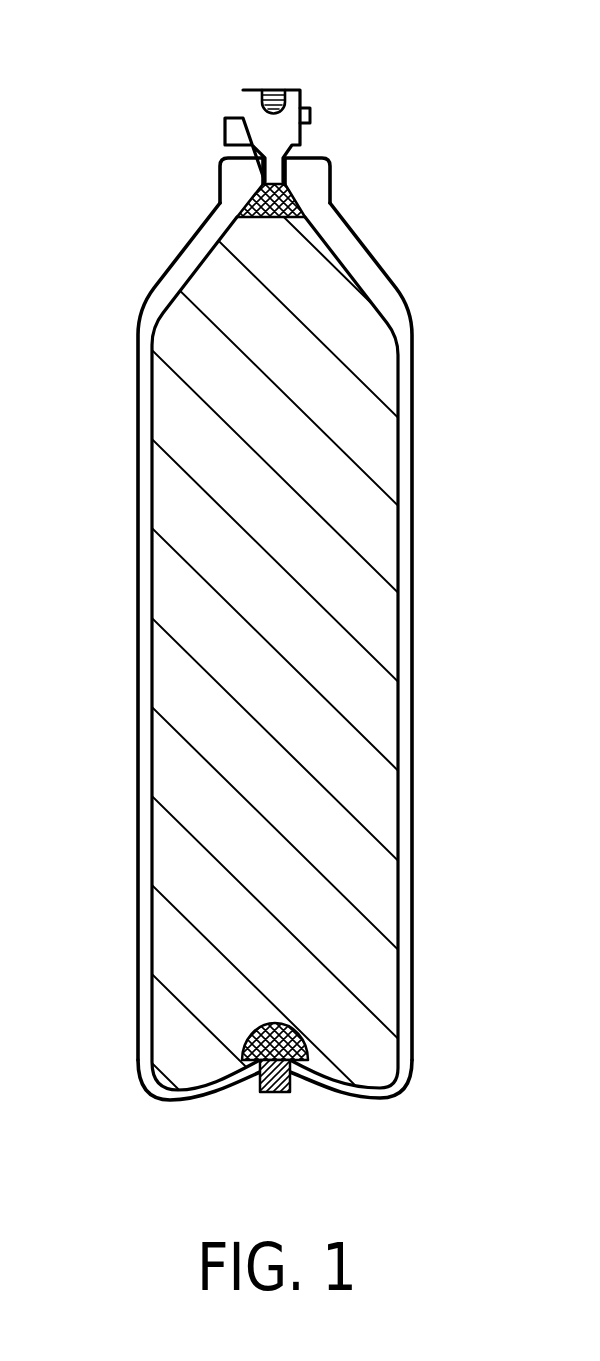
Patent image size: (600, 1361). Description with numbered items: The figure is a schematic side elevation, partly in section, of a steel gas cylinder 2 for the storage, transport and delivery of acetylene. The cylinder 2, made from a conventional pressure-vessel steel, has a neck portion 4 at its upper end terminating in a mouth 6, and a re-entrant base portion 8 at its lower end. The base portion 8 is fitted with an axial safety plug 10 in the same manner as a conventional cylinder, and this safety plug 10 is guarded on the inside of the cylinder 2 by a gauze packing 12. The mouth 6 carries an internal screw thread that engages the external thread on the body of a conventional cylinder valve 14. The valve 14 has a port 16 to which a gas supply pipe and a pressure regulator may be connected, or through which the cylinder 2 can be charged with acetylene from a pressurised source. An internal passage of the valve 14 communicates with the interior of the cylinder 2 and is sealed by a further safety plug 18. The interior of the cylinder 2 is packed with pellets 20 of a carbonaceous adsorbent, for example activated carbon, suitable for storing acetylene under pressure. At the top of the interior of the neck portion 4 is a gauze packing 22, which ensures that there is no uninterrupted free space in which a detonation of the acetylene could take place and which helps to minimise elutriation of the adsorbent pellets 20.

The steel gas cylinder 2 is at (138, 477).
The neck portion 4 is at (167, 267).
The mouth 6 is at (275, 171).
The re-entrant base portion 8 is at (330, 1095).
The axial safety plug 10 is at (252, 1097).
The gauze packing 12 is at (247, 1033).
The cylinder valve 14 is at (226, 117).
The port 16 is at (276, 90).
The safety plug 18 is at (325, 115).
The pellets 20 is at (363, 457).
The gauze packing 22 is at (287, 197).